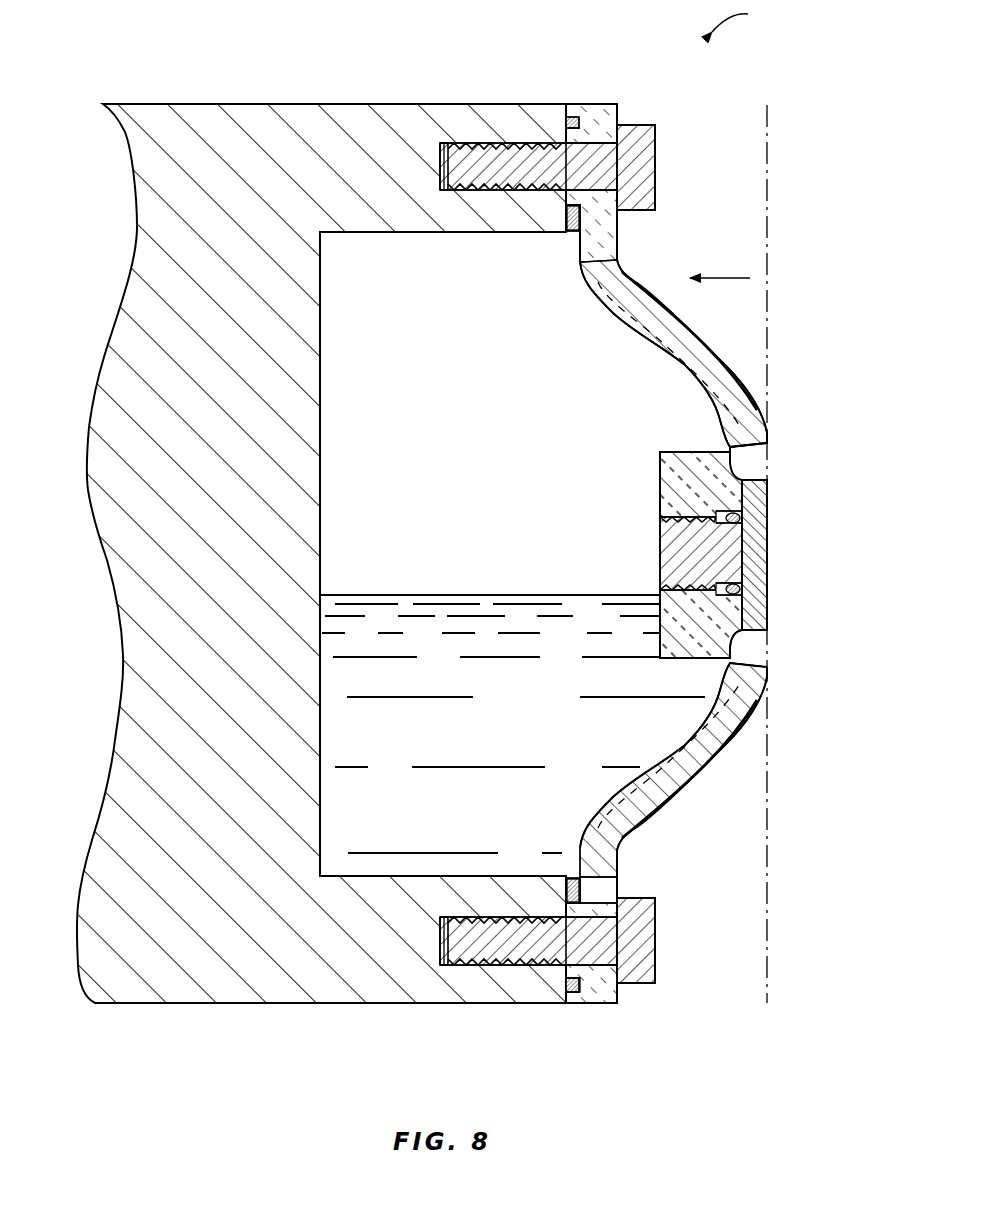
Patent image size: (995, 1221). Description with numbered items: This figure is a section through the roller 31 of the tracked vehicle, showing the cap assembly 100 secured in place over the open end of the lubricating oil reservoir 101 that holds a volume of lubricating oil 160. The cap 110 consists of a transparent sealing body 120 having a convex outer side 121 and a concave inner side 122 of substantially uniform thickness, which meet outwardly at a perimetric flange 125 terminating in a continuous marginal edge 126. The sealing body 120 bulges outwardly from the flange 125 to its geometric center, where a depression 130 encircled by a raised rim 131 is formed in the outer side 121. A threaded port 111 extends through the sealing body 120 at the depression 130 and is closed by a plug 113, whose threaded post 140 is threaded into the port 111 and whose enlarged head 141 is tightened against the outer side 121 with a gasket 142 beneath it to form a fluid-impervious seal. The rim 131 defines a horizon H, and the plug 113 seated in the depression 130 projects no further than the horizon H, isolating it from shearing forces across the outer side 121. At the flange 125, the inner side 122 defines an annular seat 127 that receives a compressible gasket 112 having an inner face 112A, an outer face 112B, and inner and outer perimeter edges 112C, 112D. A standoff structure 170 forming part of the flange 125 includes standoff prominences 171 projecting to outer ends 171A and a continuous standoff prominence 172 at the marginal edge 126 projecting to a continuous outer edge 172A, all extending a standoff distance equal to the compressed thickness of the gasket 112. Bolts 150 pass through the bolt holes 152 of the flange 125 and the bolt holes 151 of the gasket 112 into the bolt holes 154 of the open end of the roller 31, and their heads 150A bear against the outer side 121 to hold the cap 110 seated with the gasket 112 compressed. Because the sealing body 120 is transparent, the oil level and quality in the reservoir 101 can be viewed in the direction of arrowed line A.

The roller 31 is at (338, 102).
The cap assembly 100 is at (752, 17).
The lubricating oil reservoir 101 is at (385, 421).
The cap 110 is at (591, 886).
The port 111 is at (692, 558).
The gasket 112 is at (572, 236).
The inner face of gasket 112A is at (568, 878).
The outer face of gasket 112B is at (575, 893).
The inner perimeter edge of gasket 112C is at (572, 878).
The outer perimeter edge of gasket 112D is at (567, 117).
The plug 113 is at (769, 585).
The sealing body 120 is at (721, 361).
The outer side of sealing body 121 is at (712, 770).
The inner side of sealing body 122 is at (673, 770).
The perimetric flange 125 is at (640, 266).
The marginal edge 126 is at (594, 74).
The gasket-receiving seat 127 is at (580, 228).
The depression 130 is at (733, 462).
The raised rim 131 is at (767, 440).
The threaded post 140 is at (697, 571).
The head 141 is at (745, 507).
The gasket 142 is at (750, 591).
The bolts 150 is at (713, 557).
The heads of bolts 150A is at (655, 153).
The bolt holes of gasket 151 is at (537, 188).
The bolt holes of flange 152 is at (640, 125).
The bolt holes of open end 154 is at (517, 559).
The lubricating oil 160 is at (540, 734).
The standoff structure 170 is at (557, 1037).
The standoff prominences 171 is at (573, 210).
The outer end of standoff prominence 171A is at (566, 140).
The continuous standoff prominence 172 is at (580, 1007).
The continuous outer edge 172A is at (566, 992).
The arrowed line A is at (730, 278).
The horizon H is at (767, 248).